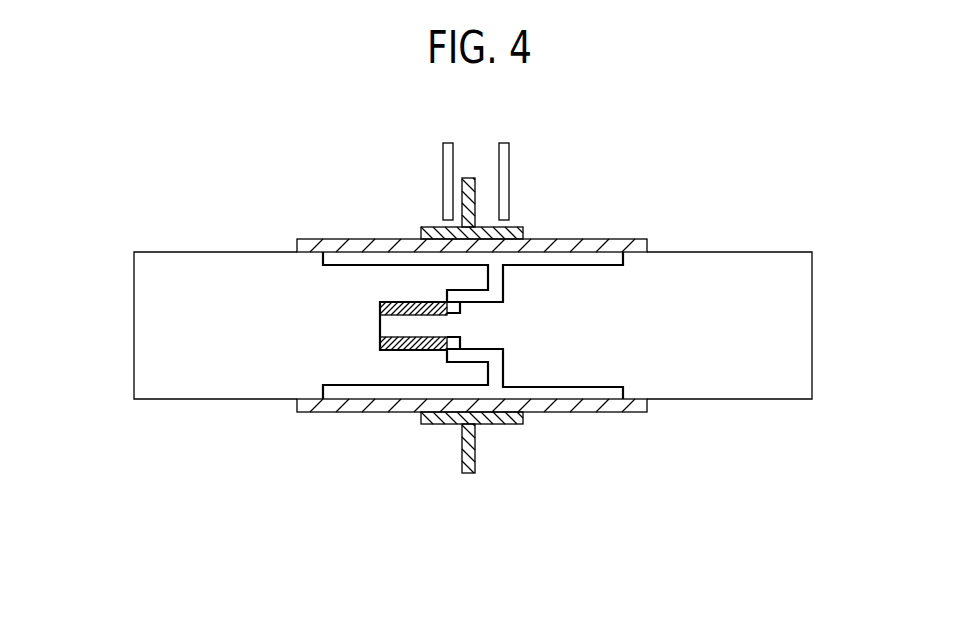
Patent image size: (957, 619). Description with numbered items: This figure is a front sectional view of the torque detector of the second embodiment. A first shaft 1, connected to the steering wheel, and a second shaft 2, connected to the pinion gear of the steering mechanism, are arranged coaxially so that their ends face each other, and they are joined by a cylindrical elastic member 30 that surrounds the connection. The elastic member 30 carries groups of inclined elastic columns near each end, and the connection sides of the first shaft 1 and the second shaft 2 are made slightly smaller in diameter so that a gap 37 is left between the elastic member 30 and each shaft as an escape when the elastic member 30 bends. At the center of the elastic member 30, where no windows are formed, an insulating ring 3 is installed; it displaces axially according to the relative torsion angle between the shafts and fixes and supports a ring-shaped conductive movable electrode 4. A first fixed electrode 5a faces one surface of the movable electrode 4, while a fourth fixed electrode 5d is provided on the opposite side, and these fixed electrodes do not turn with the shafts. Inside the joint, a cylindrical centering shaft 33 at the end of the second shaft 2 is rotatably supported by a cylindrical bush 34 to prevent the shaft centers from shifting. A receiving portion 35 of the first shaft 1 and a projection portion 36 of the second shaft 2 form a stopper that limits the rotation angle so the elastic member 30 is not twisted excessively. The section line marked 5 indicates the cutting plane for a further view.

The first shaft 1 is at (245, 262).
The second shaft 2 is at (722, 262).
The ring 3 is at (437, 420).
The movable electrode 4 is at (465, 198).
The section line V-V 5 is at (471, 165).
The first fixed electrode 5a is at (445, 160).
The fourth fixed electrode 5d is at (506, 158).
The elastic member 30 is at (317, 412).
The centering shaft 33 is at (400, 327).
The bush 34 is at (413, 300).
The receiving portion 35 is at (472, 377).
The projection portion 36 is at (483, 330).
The gap 37 is at (585, 258).